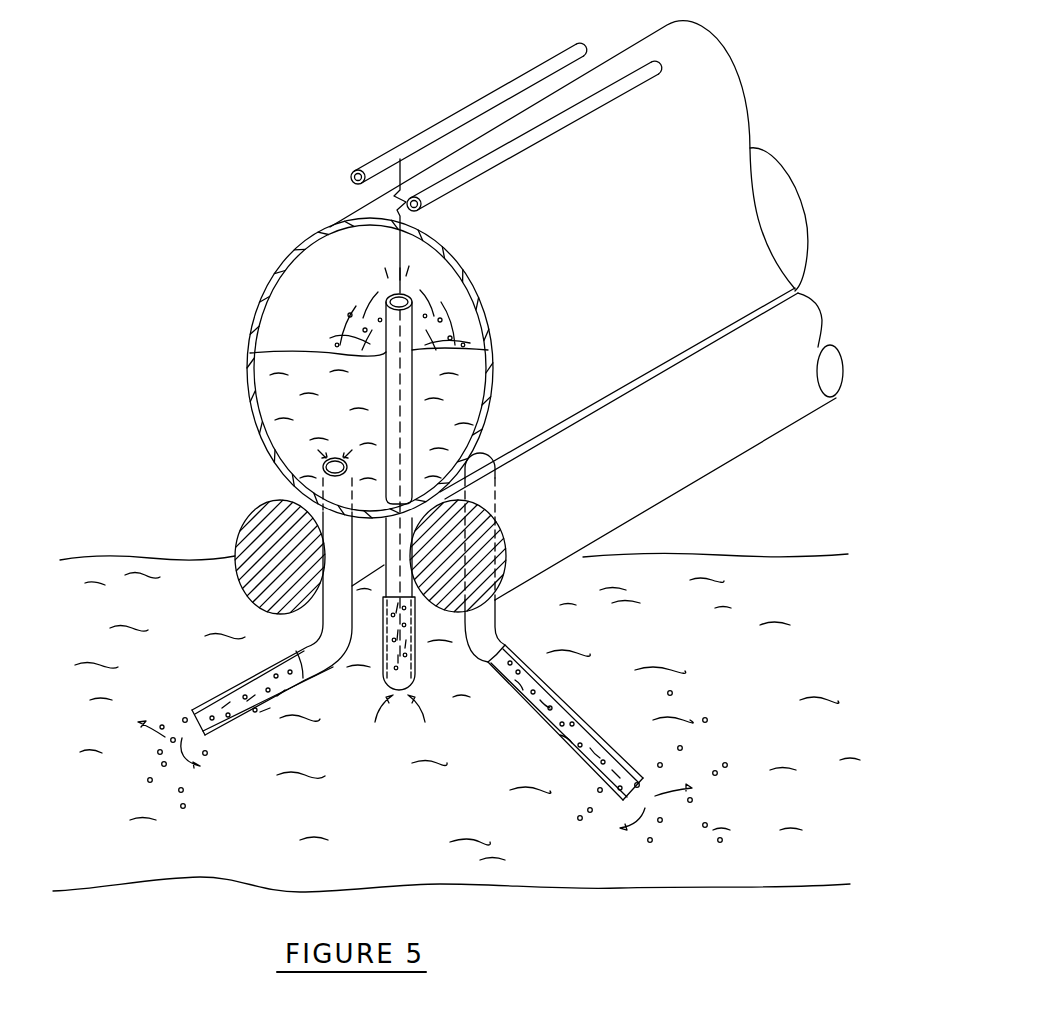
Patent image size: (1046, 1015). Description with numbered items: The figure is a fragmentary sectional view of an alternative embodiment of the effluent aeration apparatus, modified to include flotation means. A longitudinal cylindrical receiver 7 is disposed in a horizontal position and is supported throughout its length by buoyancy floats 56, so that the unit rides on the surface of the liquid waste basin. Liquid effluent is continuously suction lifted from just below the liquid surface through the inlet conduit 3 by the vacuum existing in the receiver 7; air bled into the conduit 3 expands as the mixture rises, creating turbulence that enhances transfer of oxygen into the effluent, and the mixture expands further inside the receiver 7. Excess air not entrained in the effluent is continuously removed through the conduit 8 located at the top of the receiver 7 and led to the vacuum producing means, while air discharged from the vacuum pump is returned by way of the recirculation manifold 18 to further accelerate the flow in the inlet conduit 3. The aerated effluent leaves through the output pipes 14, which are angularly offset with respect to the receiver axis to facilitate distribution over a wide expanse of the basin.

The conduit 3 is at (415, 668).
The receiver 7 is at (280, 268).
The conduit 8 is at (488, 171).
The output pipes 14 is at (308, 675).
The recirculation manifold 18 is at (410, 138).
The buoyancy floats 56 is at (250, 515).